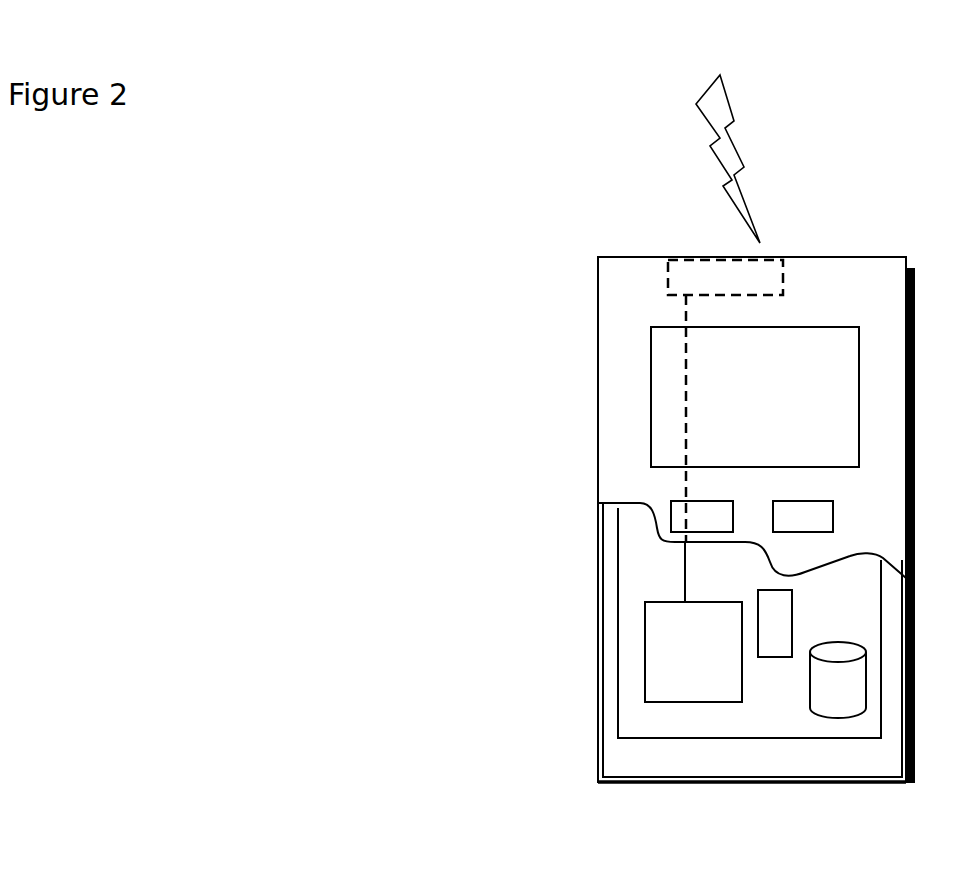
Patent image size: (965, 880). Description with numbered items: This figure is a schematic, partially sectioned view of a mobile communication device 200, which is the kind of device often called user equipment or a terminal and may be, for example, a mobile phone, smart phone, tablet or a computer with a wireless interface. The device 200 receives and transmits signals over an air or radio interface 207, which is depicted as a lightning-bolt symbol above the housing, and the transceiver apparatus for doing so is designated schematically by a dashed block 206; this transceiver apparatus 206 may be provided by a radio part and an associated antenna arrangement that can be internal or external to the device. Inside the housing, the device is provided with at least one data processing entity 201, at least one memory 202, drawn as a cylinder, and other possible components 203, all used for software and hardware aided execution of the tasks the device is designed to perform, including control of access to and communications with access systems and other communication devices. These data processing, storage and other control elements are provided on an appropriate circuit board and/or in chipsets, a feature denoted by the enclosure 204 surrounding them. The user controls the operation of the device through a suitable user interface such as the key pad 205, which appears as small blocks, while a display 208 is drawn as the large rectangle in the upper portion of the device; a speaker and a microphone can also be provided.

The communication device 200 is at (598, 300).
The data processing entity 201 is at (652, 634).
The memory 202 is at (832, 693).
The other possible components 203 is at (775, 607).
The circuit board and/or chipsets 204 is at (643, 722).
The key pad 205 is at (675, 516).
The transceiver apparatus 206 is at (772, 272).
The air or radio interface 207 is at (760, 184).
The display 208 is at (668, 383).